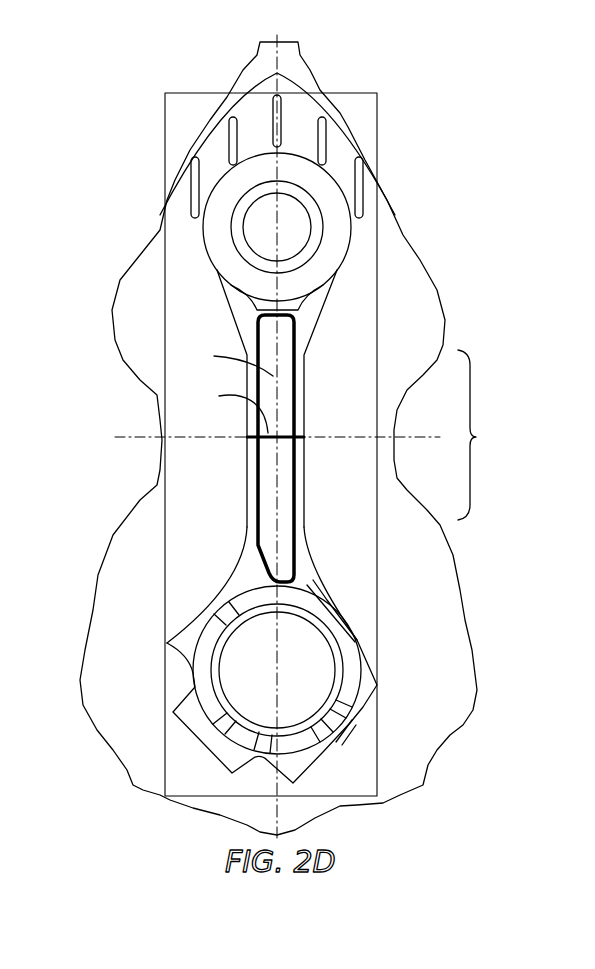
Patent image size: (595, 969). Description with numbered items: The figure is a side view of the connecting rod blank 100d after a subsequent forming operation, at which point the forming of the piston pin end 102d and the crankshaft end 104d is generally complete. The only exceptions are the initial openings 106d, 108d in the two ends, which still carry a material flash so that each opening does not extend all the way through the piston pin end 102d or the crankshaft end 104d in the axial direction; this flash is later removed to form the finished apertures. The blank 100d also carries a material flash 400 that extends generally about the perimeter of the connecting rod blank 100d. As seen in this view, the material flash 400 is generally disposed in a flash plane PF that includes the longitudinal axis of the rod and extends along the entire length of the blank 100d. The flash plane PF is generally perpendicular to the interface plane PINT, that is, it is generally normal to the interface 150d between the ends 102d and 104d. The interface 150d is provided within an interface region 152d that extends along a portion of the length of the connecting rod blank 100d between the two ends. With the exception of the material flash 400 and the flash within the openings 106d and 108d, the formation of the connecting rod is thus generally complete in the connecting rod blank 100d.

The connecting rod blank 100d is at (445, 133).
The piston pin end 102d is at (402, 195).
The crankshaft end 104d is at (478, 627).
The initial opening 106d is at (300, 240).
The initial opening 108d is at (329, 670).
The interface 150d is at (284, 433).
The interface region 152d is at (477, 437).
The material flash 400 is at (334, 468).
The flash plane PF is at (368, 104).
The interface plane PINT is at (151, 435).